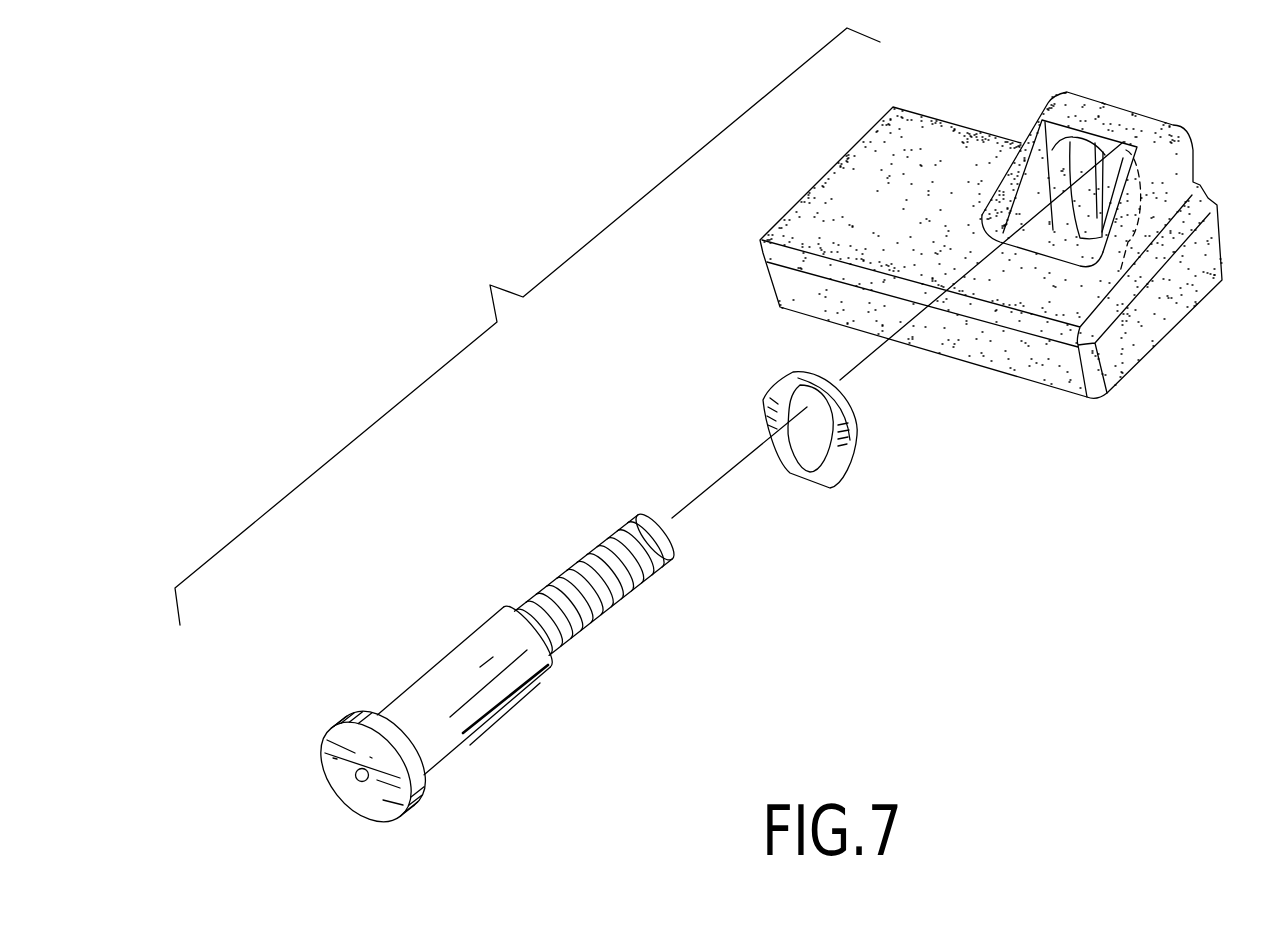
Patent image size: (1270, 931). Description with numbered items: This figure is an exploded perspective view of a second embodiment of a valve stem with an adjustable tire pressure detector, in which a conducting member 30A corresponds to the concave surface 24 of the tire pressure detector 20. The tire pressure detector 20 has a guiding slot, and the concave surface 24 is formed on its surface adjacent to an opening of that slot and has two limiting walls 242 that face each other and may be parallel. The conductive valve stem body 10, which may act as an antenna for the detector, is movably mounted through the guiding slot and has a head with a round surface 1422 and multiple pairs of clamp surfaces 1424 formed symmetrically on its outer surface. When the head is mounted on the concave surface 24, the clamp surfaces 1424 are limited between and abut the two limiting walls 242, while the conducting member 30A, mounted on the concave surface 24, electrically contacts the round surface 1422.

The valve stem body 10 is at (566, 687).
The round surface 1422 is at (413, 740).
The clamp surfaces 1424 is at (420, 783).
The tire pressure detector 20 is at (1150, 343).
The concave surface 24 is at (1070, 168).
The limiting walls 242 is at (1042, 168).
The conducting member 30A is at (847, 448).